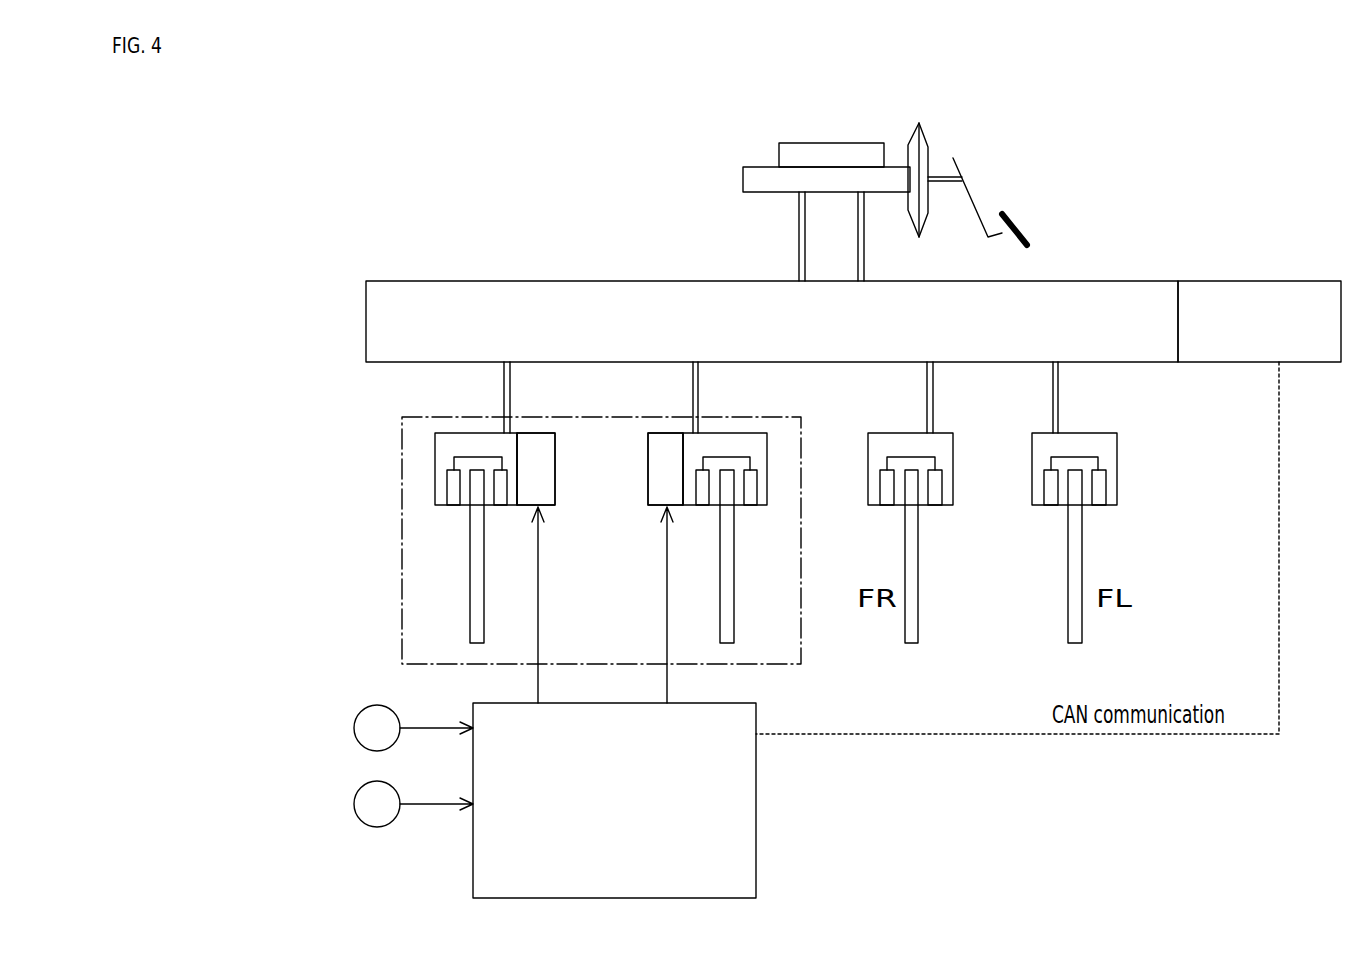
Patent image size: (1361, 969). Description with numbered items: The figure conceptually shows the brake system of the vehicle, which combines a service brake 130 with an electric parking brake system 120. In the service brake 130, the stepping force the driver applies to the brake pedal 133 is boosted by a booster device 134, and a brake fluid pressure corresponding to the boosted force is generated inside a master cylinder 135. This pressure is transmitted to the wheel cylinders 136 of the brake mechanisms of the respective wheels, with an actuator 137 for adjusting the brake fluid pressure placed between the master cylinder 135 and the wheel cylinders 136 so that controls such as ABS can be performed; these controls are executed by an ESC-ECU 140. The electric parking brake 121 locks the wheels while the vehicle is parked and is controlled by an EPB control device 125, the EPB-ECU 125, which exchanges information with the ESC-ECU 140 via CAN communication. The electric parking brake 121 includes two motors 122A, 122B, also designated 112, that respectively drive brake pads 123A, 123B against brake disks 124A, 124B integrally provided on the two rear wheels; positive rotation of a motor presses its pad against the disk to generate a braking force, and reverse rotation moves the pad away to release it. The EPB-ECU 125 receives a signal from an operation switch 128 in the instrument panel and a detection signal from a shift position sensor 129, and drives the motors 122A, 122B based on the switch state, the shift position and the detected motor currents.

The service brake 130 is at (1031, 148).
The brake pedal 133 is at (1007, 222).
The booster device 134 is at (924, 132).
The master cylinder 135 is at (755, 167).
The wheel cylinders 136 is at (511, 433).
The actuator 137 is at (1137, 281).
The ESC-ECU 140 is at (1285, 281).
The electric parking brake system 120 is at (873, 792).
The electric parking brake 121 is at (767, 665).
The motor 122A is at (555, 448).
The motor 122B is at (648, 498).
The electric actuator 112 is at (600, 526).
The brake pad 123A is at (435, 487).
The brake pad 123B is at (750, 506).
The brake disk 124A is at (471, 627).
The brake disk 124B is at (733, 563).
The EPB control device 125 is at (756, 858).
The operation switch 128 is at (354, 733).
The shift position sensor 129 is at (354, 805).